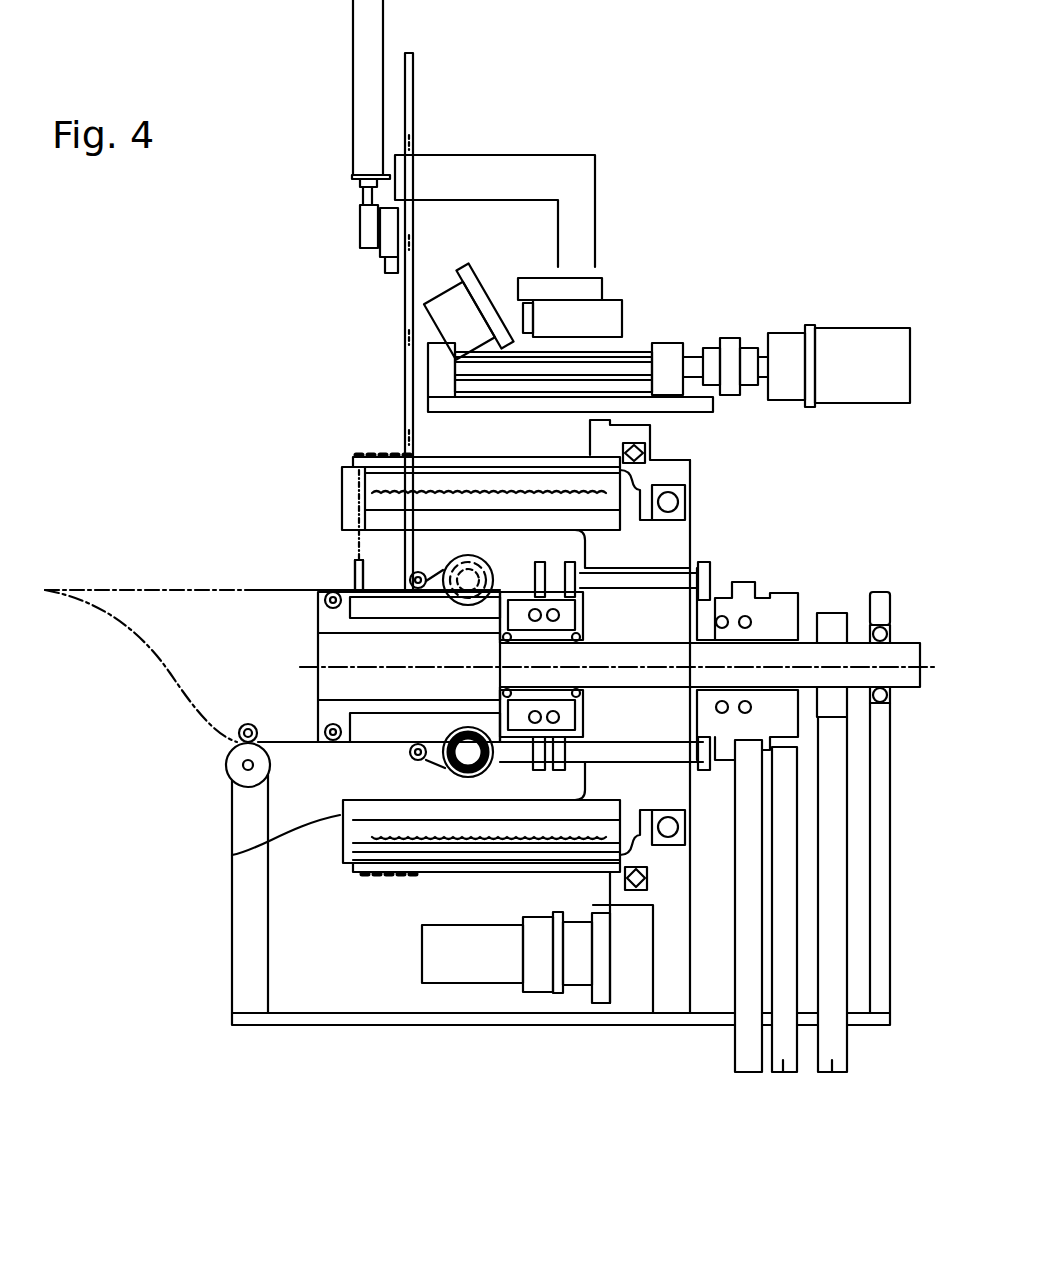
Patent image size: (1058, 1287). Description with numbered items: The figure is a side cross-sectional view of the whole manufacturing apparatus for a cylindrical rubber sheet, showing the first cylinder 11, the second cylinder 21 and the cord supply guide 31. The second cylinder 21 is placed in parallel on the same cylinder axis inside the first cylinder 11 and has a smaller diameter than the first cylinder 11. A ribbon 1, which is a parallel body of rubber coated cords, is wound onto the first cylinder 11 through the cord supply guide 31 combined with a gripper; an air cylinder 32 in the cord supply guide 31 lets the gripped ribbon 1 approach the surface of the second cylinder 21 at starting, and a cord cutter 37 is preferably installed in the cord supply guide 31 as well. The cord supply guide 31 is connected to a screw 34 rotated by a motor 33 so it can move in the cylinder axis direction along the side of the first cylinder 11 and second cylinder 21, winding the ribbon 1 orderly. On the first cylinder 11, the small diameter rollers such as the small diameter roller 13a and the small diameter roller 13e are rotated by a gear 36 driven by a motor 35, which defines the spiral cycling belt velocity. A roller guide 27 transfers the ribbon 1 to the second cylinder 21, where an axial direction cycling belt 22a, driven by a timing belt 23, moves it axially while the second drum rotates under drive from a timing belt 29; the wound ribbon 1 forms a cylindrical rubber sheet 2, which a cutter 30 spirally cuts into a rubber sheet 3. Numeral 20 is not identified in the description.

The ribbon 1 is at (413, 97).
The cylindrical rubber sheet 2 is at (287, 587).
The rubber sheet 3 is at (137, 590).
The first cylinder 11 is at (395, 743).
The small diameter roller 13a is at (445, 875).
The small diameter roller 13e is at (463, 455).
The support leg 20 is at (847, 1065).
The second cylinder 21 is at (330, 683).
The cycling belt 22a is at (342, 815).
The timing belt 23 is at (735, 1052).
The roller guide 27 is at (355, 575).
The timing belt 29 is at (783, 1072).
The cutter 30 is at (227, 755).
The cord supply guide 31 is at (403, 282).
The air cylinder 32 is at (353, 110).
The motor 33 is at (855, 328).
The screw 34 is at (647, 352).
The motor 35 is at (442, 983).
The gear 36 is at (612, 912).
The cord cutter 37 is at (430, 347).